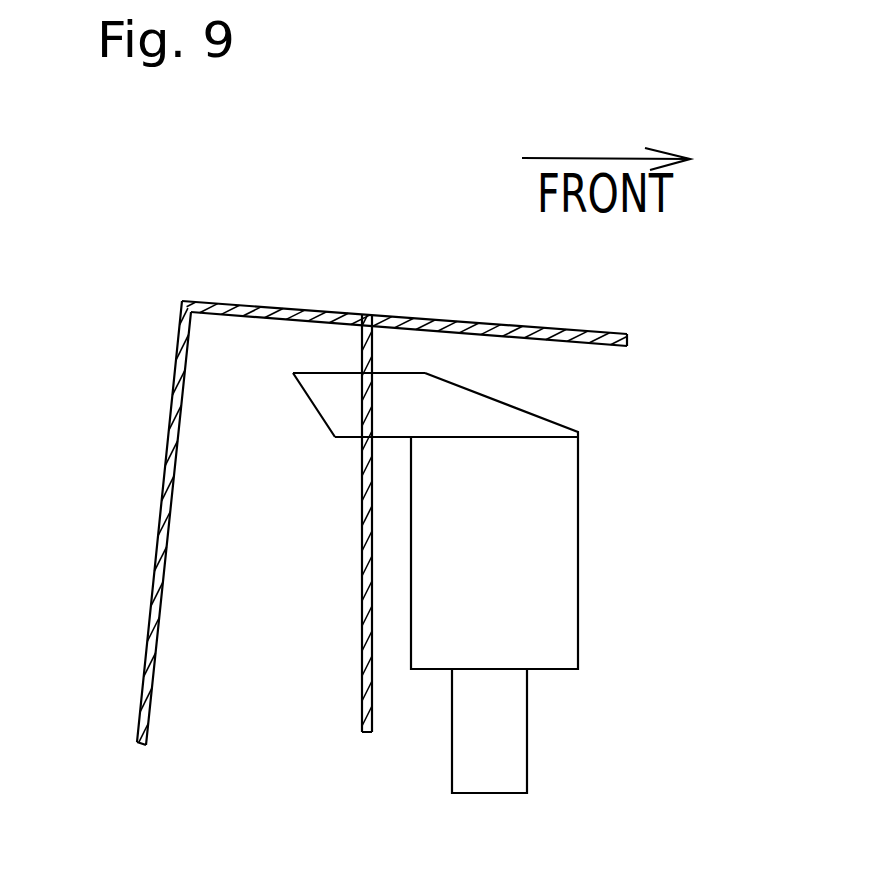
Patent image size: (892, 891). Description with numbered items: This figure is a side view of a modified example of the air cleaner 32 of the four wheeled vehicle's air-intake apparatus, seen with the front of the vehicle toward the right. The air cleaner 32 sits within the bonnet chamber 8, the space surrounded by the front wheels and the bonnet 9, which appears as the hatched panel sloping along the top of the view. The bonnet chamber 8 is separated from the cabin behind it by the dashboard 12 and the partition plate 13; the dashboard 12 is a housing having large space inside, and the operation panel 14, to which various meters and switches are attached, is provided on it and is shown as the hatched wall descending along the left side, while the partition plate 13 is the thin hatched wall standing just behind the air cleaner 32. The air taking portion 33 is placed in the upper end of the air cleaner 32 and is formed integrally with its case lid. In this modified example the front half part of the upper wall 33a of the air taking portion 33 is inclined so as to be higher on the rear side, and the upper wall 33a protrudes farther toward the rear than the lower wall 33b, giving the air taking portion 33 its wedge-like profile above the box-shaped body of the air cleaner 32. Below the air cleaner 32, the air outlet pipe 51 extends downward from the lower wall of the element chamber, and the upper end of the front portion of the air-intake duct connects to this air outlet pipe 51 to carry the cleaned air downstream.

The bonnet chamber 8 is at (502, 445).
The bonnet 9 is at (427, 325).
The dashboard 12 is at (258, 316).
The partition plate 13 is at (360, 640).
The operation panel 14 is at (163, 512).
The air cleaner 32 is at (605, 634).
The air taking portion 33 is at (424, 384).
The upper wall 33a is at (327, 375).
The lower wall 33b is at (358, 438).
The air outlet pipe 51 is at (517, 747).